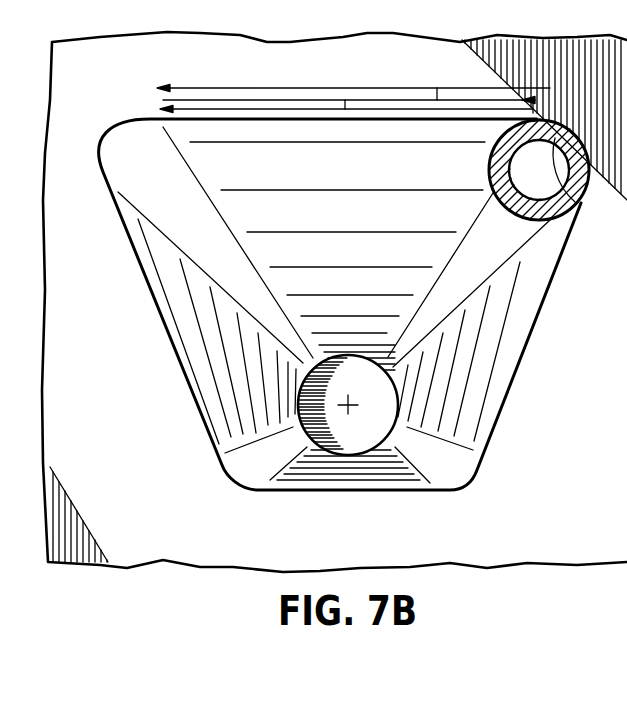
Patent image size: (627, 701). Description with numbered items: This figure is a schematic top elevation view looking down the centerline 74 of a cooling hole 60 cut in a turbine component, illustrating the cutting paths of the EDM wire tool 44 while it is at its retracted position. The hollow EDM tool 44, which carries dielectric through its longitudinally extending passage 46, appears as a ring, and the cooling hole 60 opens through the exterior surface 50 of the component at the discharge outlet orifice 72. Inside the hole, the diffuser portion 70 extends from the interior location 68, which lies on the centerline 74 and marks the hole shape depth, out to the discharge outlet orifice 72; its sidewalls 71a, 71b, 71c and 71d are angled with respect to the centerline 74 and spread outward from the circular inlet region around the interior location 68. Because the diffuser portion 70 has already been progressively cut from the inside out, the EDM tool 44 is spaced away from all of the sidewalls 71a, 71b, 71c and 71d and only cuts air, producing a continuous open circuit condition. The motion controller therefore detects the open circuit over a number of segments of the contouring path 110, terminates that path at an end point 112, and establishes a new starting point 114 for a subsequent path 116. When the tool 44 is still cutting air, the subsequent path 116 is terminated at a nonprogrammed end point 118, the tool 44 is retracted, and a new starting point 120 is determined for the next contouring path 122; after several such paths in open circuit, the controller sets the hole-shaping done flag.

The EDM wire tool 44 is at (523, 223).
The longitudinally extending passage 46 is at (575, 206).
The exterior surface 50 is at (145, 414).
The cooling hole 60 is at (253, 472).
The interior location 68 is at (382, 400).
The diffuser portion 70 is at (236, 127).
The sidewall 71a is at (410, 137).
The sidewall 71b is at (462, 387).
The sidewall 71c is at (313, 472).
The sidewall 71d is at (200, 292).
The discharge outlet orifice 72 is at (382, 118).
The centerline 74 is at (350, 407).
The contouring path 110 is at (350, 109).
The end point 112 is at (160, 109).
The new starting point 114 is at (165, 100).
The subsequent path 116 is at (439, 97).
The nonprogrammed end point 118 is at (535, 100).
The new starting point 120 is at (535, 100).
The next contouring path 122 is at (288, 88).